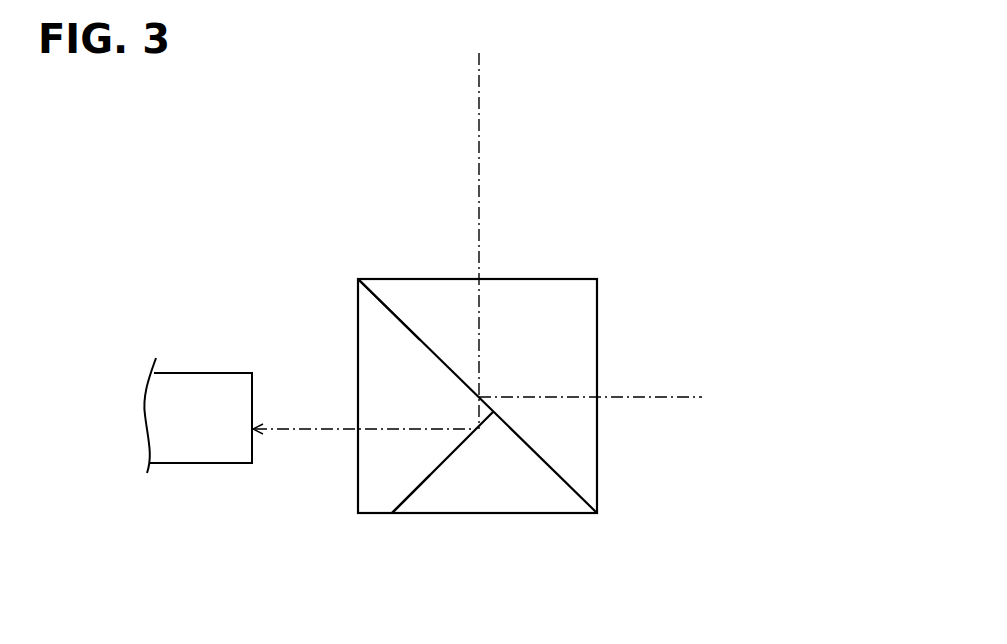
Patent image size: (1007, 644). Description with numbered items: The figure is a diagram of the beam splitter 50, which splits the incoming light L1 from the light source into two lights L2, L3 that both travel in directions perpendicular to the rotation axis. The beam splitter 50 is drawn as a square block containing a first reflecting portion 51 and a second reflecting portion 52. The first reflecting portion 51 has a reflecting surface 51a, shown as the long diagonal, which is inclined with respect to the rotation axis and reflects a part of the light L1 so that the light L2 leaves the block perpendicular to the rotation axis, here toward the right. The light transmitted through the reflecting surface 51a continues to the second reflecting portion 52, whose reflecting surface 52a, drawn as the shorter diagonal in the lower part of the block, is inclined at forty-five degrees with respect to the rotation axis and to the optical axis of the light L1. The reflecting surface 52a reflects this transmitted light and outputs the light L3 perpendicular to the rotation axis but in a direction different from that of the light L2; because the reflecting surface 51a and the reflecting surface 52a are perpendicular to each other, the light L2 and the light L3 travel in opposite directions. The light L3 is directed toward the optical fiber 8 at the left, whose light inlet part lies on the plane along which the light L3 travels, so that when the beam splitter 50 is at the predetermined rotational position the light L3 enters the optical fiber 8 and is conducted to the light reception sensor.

The optical fiber 8 is at (207, 373).
The beam splitter 50 is at (608, 250).
The first reflecting portion 51 is at (425, 340).
The reflecting surface 51a is at (393, 313).
The second reflecting portion 52 is at (422, 473).
The reflecting surface 52a is at (403, 501).
The light L1 is at (476, 186).
The light L2 is at (607, 394).
The light L3 is at (313, 425).